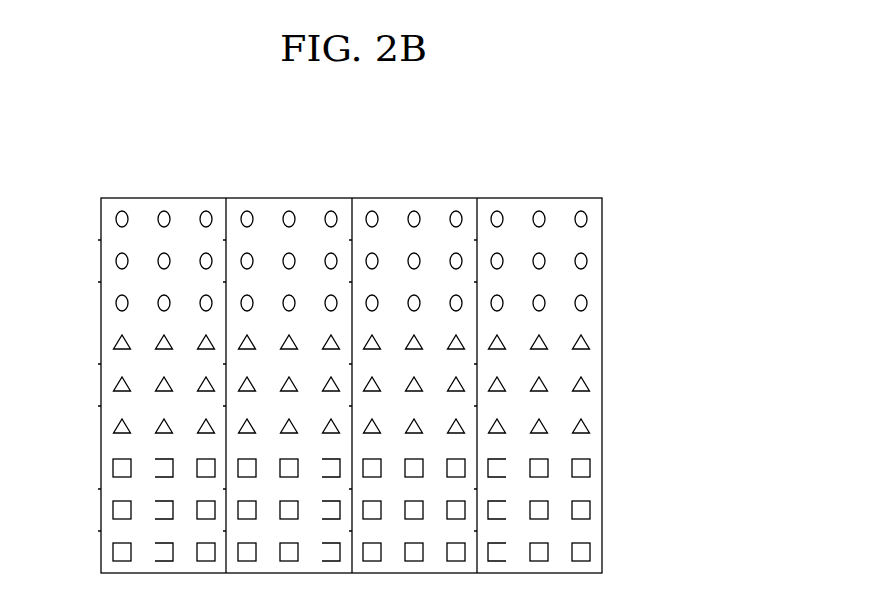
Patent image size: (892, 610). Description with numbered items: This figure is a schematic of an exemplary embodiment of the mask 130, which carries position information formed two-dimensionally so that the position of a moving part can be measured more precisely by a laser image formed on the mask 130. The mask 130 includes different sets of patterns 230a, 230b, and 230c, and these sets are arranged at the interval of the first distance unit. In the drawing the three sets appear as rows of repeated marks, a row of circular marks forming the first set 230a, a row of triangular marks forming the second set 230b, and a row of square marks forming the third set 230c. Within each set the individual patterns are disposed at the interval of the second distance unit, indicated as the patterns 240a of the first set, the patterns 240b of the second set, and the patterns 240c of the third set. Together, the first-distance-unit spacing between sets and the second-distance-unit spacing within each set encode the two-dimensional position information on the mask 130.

The mask 130 is at (372, 335).
The first set of patterns 230a is at (358, 261).
The second set of patterns 230b is at (358, 384).
The third set of patterns 230c is at (357, 511).
The patterns at the second distance unit interval of the first set 240a is at (546, 269).
The patterns at the second distance unit interval of the second set 240b is at (546, 394).
The patterns at the second distance unit interval of the third set 240c is at (546, 520).